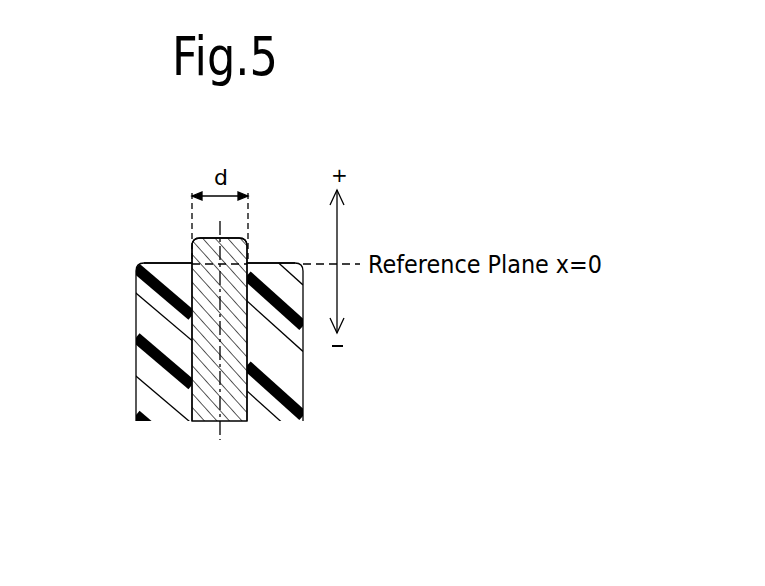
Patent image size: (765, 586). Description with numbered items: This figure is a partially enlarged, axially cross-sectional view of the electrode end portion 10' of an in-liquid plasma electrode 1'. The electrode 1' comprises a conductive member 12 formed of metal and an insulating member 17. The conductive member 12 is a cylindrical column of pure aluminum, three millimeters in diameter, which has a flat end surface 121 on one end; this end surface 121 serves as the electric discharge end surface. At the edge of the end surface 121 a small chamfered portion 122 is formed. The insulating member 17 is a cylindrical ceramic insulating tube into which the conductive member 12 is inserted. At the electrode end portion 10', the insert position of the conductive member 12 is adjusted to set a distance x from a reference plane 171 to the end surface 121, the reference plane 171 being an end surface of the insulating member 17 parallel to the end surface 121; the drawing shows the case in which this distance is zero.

The electrode end portion 10' is at (227, 329).
The in-liquid plasma electrode 1' is at (86, 501).
The insulating member 17 is at (165, 447).
The conductive member 12 is at (214, 329).
The end surface 121 is at (207, 238).
The chamfered portion 122 is at (192, 250).
The reference plane 171 is at (166, 263).